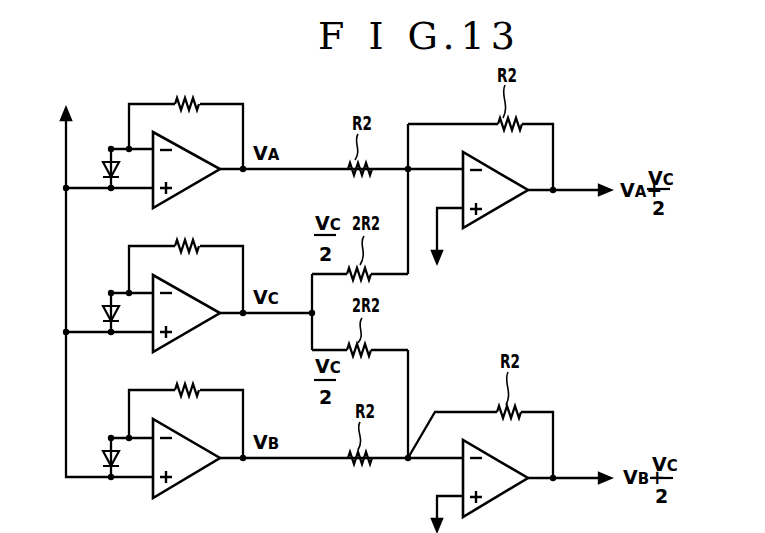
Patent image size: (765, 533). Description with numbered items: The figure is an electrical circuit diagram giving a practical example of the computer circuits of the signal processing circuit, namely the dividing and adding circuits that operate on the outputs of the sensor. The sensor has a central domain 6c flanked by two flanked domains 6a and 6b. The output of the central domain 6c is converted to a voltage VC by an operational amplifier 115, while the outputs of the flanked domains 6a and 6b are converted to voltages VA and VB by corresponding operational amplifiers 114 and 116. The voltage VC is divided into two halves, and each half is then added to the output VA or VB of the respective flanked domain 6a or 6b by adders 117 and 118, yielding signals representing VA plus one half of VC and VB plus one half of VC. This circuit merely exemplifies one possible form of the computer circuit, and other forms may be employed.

The operational amplifier 114 is at (188, 97).
The operational amplifier 115 is at (188, 240).
The operational amplifier 116 is at (190, 384).
The adder 117 is at (495, 170).
The adder 118 is at (490, 457).
The flanked domain 6a is at (103, 168).
The flanked domain 6b is at (103, 455).
The central domain 6c is at (103, 312).